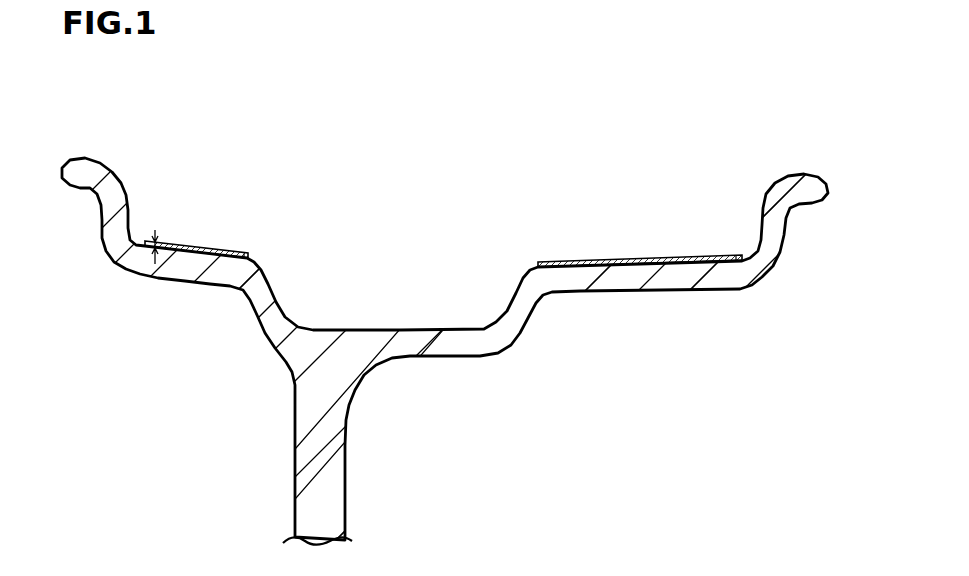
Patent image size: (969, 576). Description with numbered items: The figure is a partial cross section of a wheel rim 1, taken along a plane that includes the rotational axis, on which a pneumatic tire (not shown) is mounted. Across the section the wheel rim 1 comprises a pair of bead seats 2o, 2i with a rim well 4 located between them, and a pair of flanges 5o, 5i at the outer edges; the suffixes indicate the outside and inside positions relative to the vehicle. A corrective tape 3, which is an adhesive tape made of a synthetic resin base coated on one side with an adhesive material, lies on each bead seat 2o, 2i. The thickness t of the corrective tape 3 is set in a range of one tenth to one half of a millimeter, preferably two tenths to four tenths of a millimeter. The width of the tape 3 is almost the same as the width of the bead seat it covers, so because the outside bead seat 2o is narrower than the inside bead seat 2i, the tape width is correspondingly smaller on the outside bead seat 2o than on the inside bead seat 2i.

The wheel rim 1 is at (411, 399).
The outside bead seat 2o is at (203, 244).
The inside bead seat 2i is at (633, 262).
The corrective tape 3 is at (250, 257).
The rim well 4 is at (376, 330).
The outside flange 5o is at (110, 206).
The inside flange 5i is at (772, 225).
The thickness t is at (146, 242).